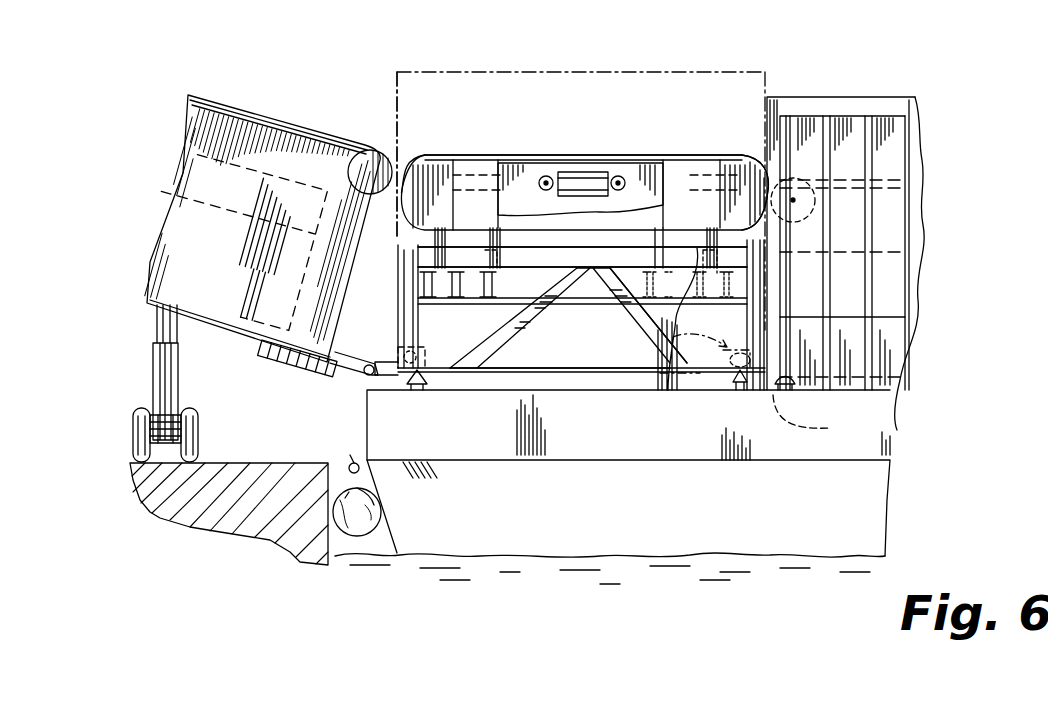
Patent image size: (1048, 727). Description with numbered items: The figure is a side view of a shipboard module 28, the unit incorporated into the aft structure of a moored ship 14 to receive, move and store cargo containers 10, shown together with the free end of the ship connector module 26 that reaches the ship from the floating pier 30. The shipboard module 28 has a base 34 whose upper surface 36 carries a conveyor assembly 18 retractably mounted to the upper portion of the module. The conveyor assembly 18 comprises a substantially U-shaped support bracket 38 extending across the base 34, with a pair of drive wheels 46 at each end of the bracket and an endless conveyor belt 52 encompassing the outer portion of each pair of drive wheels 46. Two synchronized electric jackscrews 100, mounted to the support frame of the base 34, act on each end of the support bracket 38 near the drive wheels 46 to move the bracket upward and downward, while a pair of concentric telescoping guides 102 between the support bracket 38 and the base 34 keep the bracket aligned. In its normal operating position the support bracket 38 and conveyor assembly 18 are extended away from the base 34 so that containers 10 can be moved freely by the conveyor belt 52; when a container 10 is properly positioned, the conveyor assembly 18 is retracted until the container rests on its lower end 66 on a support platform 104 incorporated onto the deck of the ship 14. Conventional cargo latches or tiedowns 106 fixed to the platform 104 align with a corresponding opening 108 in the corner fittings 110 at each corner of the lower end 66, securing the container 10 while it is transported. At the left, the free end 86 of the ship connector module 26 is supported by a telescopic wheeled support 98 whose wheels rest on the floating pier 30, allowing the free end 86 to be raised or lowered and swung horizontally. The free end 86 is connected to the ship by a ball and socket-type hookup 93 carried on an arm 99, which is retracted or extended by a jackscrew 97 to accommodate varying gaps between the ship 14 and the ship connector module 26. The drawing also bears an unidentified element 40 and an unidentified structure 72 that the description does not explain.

The cargo container 10 is at (535, 70).
The moored ship 14 is at (636, 516).
The conveyor assembly 18 is at (660, 136).
The ship connector module 26 is at (300, 304).
The shipboard module 28 is at (608, 394).
The floating pier 30 is at (248, 466).
The base 34 is at (391, 316).
The upper surface of the base 36 is at (584, 270).
The U-shaped support bracket 38 is at (470, 160).
The dash-dot reference boundary 40 is at (395, 104).
The drive wheels 46 is at (420, 160).
The endless conveyor belt 52 is at (560, 158).
The lower end of the container 66 is at (576, 374).
The container 72 is at (762, 95).
The free end 86 is at (233, 349).
The ball and socket-type hookup 93 is at (373, 353).
The jackscrew 97 is at (297, 360).
The wheeled support 98 is at (162, 376).
The arm 99 is at (358, 378).
The electric jackscrews 100 is at (412, 246).
The telescoping guides 102 is at (500, 246).
The support platform 104 is at (516, 400).
The cargo latches or tiedowns 106 is at (426, 387).
The opening 108 is at (471, 352).
The corner fittings 110 is at (661, 342).